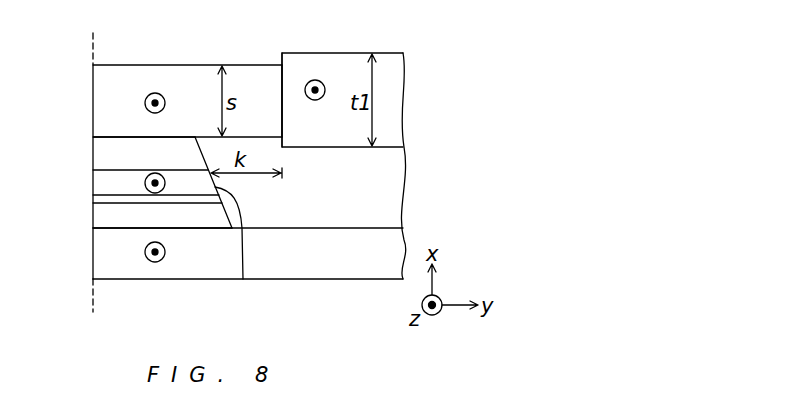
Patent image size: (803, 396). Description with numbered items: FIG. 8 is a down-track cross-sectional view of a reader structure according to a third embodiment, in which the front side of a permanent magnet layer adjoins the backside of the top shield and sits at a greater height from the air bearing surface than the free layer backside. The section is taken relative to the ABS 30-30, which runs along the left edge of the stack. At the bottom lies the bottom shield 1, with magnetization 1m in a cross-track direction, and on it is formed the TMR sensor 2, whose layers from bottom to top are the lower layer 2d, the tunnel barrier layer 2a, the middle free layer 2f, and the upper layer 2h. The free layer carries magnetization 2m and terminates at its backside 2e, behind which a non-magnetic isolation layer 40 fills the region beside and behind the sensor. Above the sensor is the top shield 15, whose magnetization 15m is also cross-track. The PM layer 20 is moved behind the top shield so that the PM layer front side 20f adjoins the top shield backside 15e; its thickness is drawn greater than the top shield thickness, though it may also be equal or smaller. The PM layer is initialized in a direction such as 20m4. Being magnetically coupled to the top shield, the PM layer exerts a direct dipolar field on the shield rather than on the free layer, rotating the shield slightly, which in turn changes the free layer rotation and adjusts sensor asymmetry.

The air bearing surface (ABS) 30 is at (94, 175).
The top shield 15 is at (110, 92).
The top shield magnetization 15m is at (179, 105).
The top shield backside 15e is at (282, 97).
The permanent magnet (PM) layer 20 is at (348, 70).
The PM layer front side 20f is at (282, 53).
The PM layer initialization direction 20m4 is at (317, 104).
The non-magnetic isolation layer 40 is at (383, 167).
The TMR sensor 2 is at (204, 228).
The upper layer 2h is at (110, 152).
The free layer 2f is at (110, 177).
The tunnel barrier layer 2a is at (108, 200).
The lower layer 2d is at (110, 226).
The free layer magnetization 2m is at (173, 183).
The free layer backside 2e is at (243, 279).
The bottom shield 1 is at (110, 262).
The bottom shield magnetization 1m is at (173, 252).